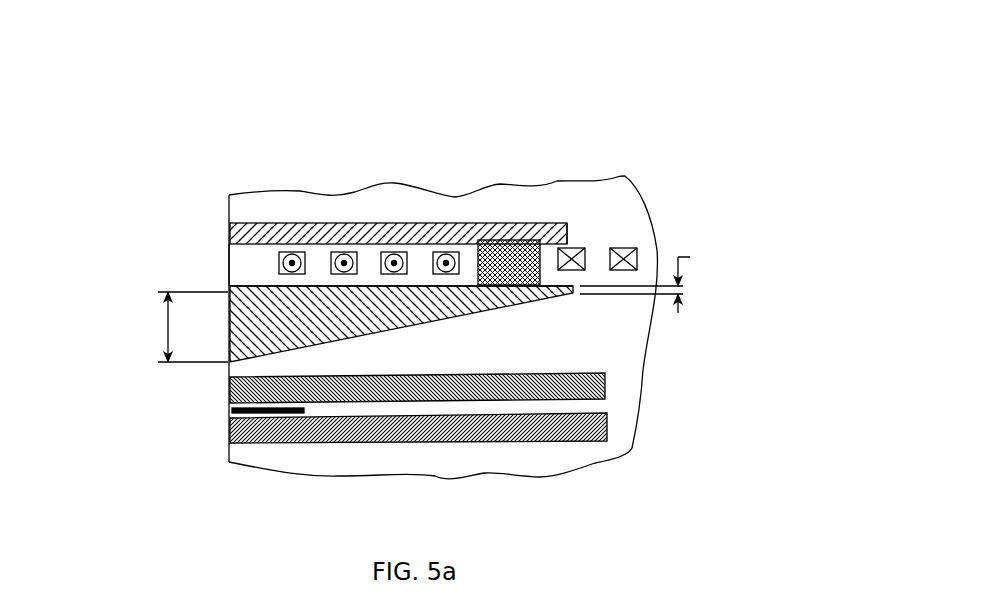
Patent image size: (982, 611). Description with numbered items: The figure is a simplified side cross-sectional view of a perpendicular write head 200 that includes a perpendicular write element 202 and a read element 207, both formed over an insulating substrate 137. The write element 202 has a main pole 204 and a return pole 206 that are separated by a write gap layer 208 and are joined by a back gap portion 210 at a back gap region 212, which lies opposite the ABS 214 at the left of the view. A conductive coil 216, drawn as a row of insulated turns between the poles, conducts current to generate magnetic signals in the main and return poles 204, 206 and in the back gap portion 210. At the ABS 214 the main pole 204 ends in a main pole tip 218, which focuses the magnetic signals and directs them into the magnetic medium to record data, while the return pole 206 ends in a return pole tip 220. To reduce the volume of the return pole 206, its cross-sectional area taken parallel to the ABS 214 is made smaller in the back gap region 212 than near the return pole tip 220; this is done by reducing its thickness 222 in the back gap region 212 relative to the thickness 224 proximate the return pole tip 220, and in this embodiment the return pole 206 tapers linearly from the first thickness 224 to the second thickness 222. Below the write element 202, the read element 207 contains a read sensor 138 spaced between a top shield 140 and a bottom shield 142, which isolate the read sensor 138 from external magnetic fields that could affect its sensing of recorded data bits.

The head 200 is at (665, 97).
The perpendicular write element 202 is at (472, 170).
The main pole 204 is at (408, 223).
The return pole 206 is at (428, 313).
The read element 207 is at (670, 362).
The write gap layer 208 is at (233, 262).
The back gap portion 210 is at (527, 298).
The back gap region 212 is at (583, 208).
The ABS 214 is at (232, 452).
The conductive coil 216 is at (336, 252).
The main pole tip 218 is at (228, 230).
The return pole tip 220 is at (228, 303).
The thickness 222 is at (658, 280).
The thickness 224 is at (168, 328).
The insulating substrate 137 is at (588, 460).
The read sensor 138 is at (232, 412).
The top shield 140 is at (605, 383).
The bottom shield 142 is at (607, 425).